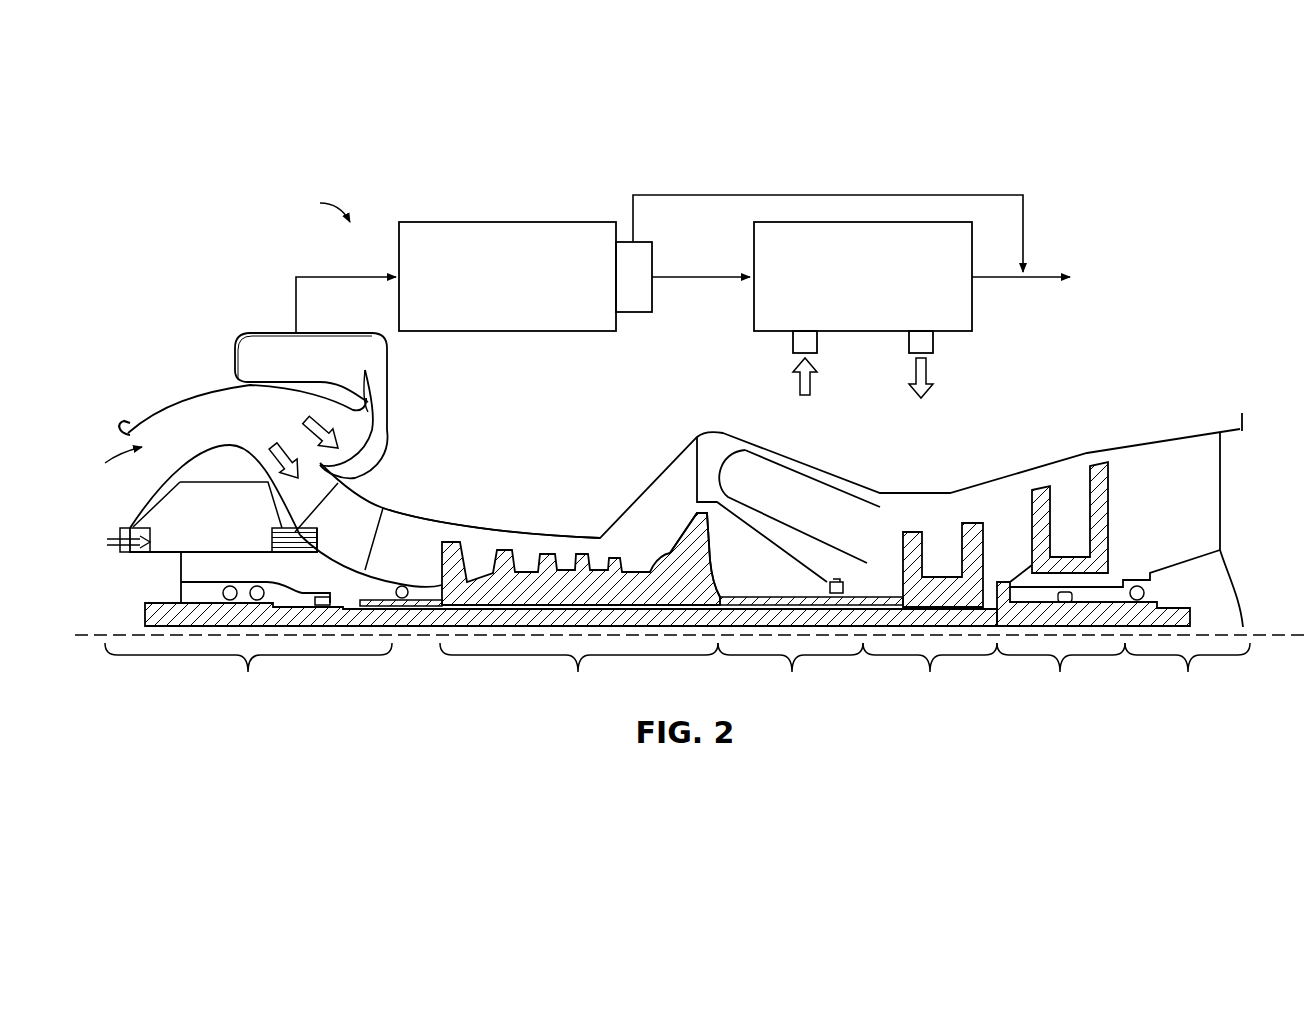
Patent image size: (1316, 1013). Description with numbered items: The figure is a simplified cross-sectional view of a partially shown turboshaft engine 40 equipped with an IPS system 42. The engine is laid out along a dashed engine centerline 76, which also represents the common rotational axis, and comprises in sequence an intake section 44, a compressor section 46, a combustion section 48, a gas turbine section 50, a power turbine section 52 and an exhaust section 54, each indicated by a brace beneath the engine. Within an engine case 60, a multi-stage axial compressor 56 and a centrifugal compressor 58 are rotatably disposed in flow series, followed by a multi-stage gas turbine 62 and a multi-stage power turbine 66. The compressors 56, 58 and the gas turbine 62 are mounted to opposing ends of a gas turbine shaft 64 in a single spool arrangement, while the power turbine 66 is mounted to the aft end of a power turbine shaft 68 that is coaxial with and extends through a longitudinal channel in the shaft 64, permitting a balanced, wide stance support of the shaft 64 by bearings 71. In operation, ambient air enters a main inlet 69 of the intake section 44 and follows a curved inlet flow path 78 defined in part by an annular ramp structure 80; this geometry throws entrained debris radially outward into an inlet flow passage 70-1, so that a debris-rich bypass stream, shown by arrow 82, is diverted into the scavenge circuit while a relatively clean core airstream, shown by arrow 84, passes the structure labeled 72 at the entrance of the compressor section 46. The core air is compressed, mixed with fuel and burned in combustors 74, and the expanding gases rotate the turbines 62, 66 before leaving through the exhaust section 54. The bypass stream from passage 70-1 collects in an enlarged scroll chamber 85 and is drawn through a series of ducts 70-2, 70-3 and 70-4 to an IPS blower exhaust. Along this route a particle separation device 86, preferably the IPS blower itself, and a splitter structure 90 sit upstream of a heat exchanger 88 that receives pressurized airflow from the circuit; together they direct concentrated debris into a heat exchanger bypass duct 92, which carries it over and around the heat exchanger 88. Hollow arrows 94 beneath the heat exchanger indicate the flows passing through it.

The turboshaft engine 40 is at (1205, 362).
The IPS system 42 is at (350, 222).
The intake section 44 is at (248, 673).
The compressor section 46 is at (579, 673).
The combustion section 48 is at (790, 673).
The gas turbine section 50 is at (930, 673).
The power turbine section 52 is at (1061, 673).
The exhaust section 54 is at (1187, 673).
The multi-stage axial compressor 56 is at (517, 573).
The centrifugal compressor 58 is at (688, 547).
The engine case 60 is at (465, 525).
The multi-stage gas turbine 62 is at (968, 525).
The gas turbine shaft 64 is at (782, 592).
The multi-stage power turbine 66 is at (1110, 512).
The power turbine shaft 68 is at (1170, 612).
The main inlet 69 is at (142, 447).
The inlet flow passage 70-1 is at (390, 432).
The duct 70-2 is at (348, 275).
The duct 70-3 is at (728, 273).
The duct 70-4 is at (985, 278).
The bearings 71 is at (257, 583).
The inlet guide strut 72 is at (370, 504).
The combustor 74 is at (797, 480).
The centerline 76 is at (1252, 632).
The inlet flow path 78 is at (207, 398).
The annular ramp structure 80 is at (235, 473).
The arrow 82 is at (316, 418).
The arrow 84 is at (281, 444).
The chamber 85 is at (273, 350).
The particle separation device 86 is at (447, 220).
The heat exchanger 88 is at (890, 332).
The splitter structure 90 is at (637, 313).
The heat exchanger bypass duct 92 is at (828, 194).
The cooling airflow 94 is at (805, 397).